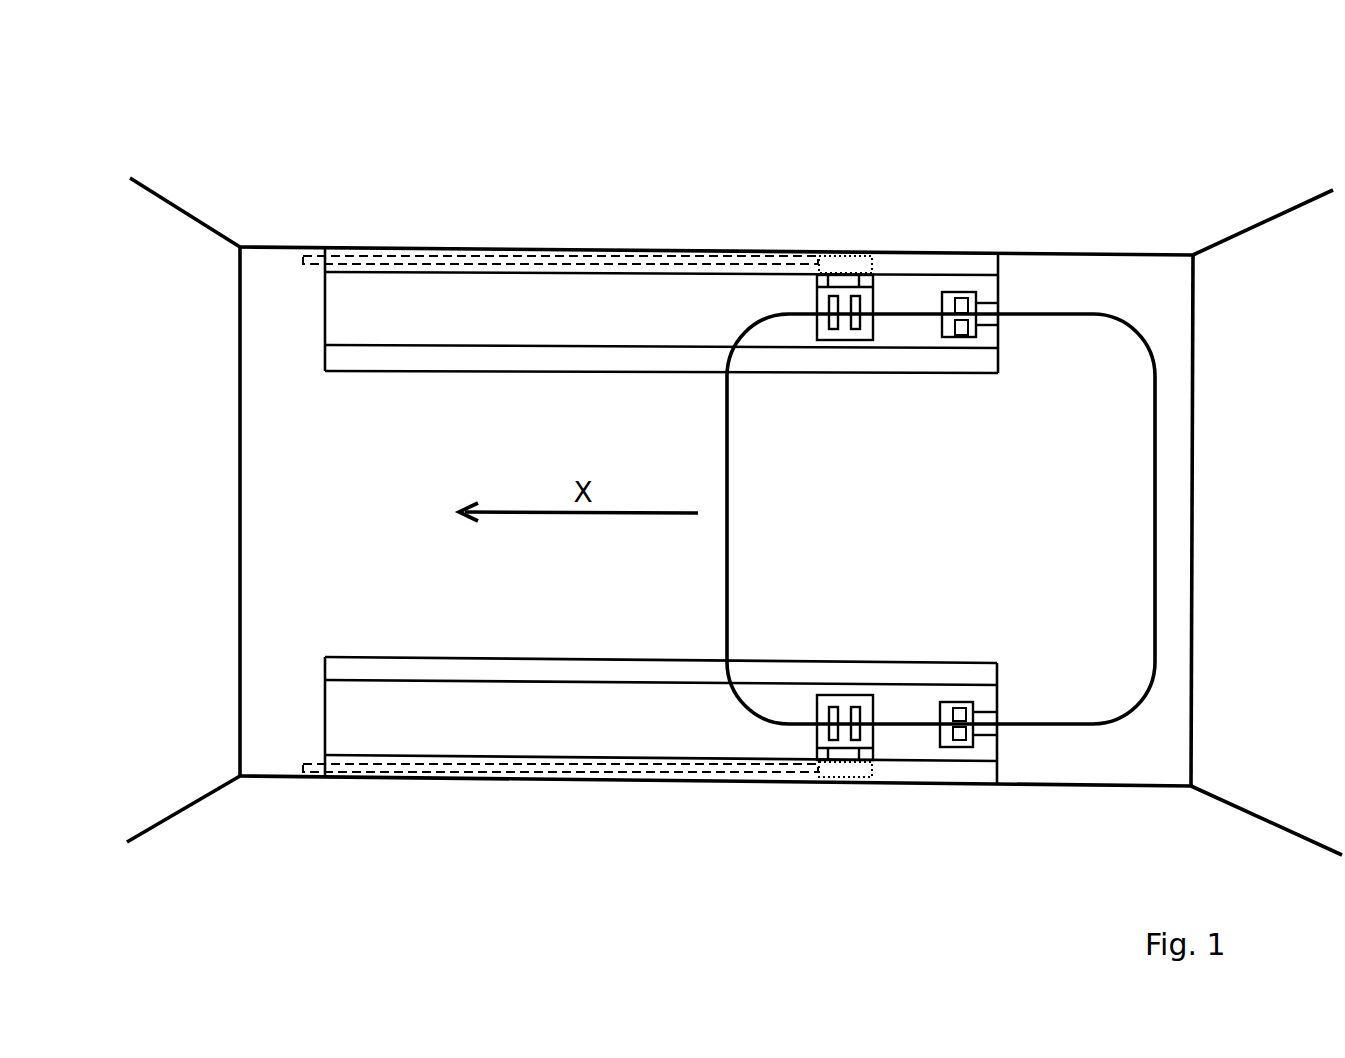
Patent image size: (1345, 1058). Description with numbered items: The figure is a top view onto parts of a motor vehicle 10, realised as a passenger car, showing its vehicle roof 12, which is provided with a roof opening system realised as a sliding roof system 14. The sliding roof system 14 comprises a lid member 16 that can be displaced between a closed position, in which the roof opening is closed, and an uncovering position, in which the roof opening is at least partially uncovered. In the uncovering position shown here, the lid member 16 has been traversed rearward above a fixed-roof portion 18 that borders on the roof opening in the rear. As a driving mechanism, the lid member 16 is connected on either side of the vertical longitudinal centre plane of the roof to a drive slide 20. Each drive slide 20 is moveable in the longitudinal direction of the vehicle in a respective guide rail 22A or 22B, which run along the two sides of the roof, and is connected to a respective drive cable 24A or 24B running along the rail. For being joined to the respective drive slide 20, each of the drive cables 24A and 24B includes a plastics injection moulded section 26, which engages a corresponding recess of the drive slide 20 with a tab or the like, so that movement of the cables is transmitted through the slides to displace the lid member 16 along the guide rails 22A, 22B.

The motor vehicle 10 is at (1299, 85).
The vehicle roof 12 is at (288, 247).
The sliding roof system 14 is at (1087, 313).
The lid member 16 is at (923, 565).
The fixed-roof portion 18 is at (1065, 773).
The drive slide 20 is at (822, 305).
The guide rail 22A is at (485, 300).
The guide rail 22B is at (468, 725).
The drive cable 24A is at (415, 255).
The drive cable 24B is at (393, 766).
The plastics injection moulded section 26 is at (848, 263).